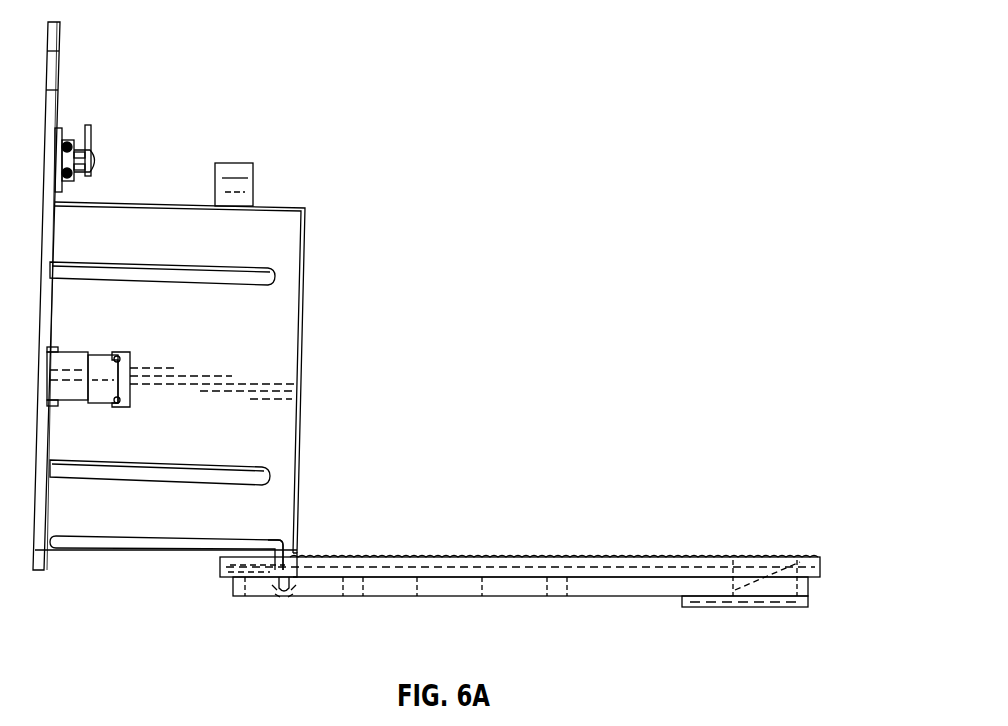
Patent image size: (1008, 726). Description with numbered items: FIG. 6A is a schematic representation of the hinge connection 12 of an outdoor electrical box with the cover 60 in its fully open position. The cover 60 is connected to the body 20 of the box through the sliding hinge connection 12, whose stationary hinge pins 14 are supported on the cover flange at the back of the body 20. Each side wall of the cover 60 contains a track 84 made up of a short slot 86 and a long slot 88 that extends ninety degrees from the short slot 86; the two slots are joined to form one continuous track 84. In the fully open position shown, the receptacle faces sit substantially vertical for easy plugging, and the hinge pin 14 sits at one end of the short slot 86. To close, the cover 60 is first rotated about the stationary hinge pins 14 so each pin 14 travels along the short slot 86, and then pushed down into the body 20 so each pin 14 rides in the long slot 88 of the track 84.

The hinge connection 12 is at (322, 511).
The stationary hinge pin 14 is at (283, 597).
The body 20 is at (820, 565).
The cover 60 is at (283, 206).
The track 84 is at (130, 553).
The short slot 86 is at (292, 553).
The long slot 88 is at (268, 540).